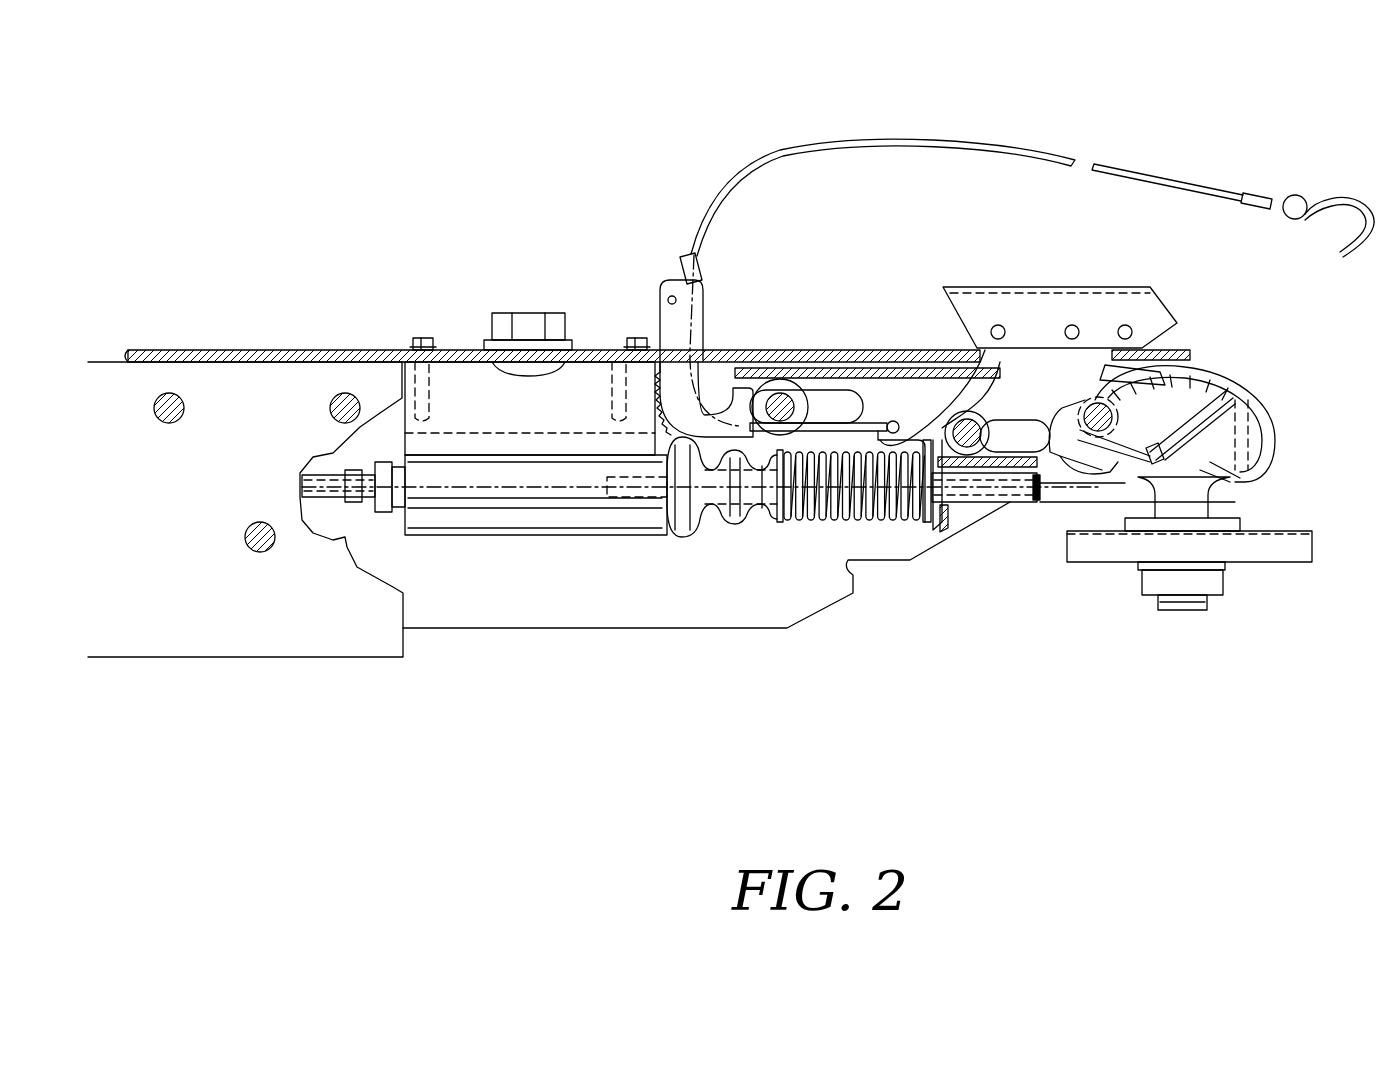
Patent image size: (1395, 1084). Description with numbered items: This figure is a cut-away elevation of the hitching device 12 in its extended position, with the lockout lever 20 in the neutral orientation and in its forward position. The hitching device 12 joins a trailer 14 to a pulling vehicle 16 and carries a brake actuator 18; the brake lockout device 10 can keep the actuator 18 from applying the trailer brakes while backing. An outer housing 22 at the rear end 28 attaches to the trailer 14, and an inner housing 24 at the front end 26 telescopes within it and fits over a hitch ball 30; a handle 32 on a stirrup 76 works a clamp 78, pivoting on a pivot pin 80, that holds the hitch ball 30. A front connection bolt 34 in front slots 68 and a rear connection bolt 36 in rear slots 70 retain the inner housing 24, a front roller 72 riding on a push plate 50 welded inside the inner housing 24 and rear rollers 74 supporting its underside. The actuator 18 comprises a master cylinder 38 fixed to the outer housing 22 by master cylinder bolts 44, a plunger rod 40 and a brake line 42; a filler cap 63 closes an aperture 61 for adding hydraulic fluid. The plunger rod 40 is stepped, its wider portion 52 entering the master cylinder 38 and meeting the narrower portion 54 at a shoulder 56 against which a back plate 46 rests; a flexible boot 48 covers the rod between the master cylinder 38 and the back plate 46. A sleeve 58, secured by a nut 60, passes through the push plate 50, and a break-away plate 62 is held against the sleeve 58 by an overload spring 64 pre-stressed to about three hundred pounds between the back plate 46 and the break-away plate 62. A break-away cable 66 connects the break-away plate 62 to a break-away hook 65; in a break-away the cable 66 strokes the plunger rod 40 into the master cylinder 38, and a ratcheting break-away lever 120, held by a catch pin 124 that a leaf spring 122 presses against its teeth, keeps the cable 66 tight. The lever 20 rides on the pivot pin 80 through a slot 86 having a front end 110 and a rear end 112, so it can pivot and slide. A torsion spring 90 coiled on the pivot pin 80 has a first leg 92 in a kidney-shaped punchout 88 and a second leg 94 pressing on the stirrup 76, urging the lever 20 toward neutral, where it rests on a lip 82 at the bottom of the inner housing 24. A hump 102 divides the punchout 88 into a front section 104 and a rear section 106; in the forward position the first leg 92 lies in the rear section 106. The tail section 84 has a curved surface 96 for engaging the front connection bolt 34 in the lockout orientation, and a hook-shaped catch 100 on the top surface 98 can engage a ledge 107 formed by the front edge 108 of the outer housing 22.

The brake lockout device 10 is at (1027, 634).
The hitching device 12 is at (583, 168).
The trailer 14 is at (108, 392).
The pulling vehicle 16 is at (1268, 560).
The brake actuator 18 is at (672, 545).
The lockout lever 20 is at (1272, 435).
The outer housing 22 is at (1200, 357).
The inner housing 24 is at (1255, 472).
The front end 26 is at (1235, 500).
The rear end 28 is at (124, 350).
The hitch ball 30 is at (1240, 520).
The handle 32 is at (1160, 340).
The front connection bolt 34 is at (958, 420).
The rear connection bolt 36 is at (775, 400).
The master cylinder 38 is at (550, 497).
The plunger rod 40 is at (1040, 490).
The brake line 42 is at (308, 476).
The master cylinder bolts 44 is at (425, 338).
The back plate 46 is at (779, 522).
The flexible boot 48 is at (690, 530).
The push plate 50 is at (936, 512).
The wider portion 52 is at (645, 500).
The narrower portion 54 is at (862, 530).
The shoulder 56 is at (752, 522).
The sleeve 58 is at (968, 503).
The nut 60 is at (1027, 503).
The aperture 61 is at (550, 345).
The break-away plate 62 is at (928, 525).
The filler cap 63 is at (540, 322).
The overload spring 64 is at (805, 522).
The break-away hook 65 is at (1341, 197).
The break-away cable 66 is at (957, 143).
The front slots 68 is at (880, 395).
The rear slots 70 is at (842, 405).
The front roller 72 is at (892, 420).
The rear rollers 74 is at (790, 400).
The stirrup 76 is at (1040, 345).
The clamp 78 is at (1100, 472).
The pivot pin 80 is at (1030, 360).
The lip 82 is at (1250, 486).
The tail section 84 is at (968, 370).
The slot 86 is at (1125, 382).
The kidney-shaped punchout 88 is at (1108, 474).
The torsion spring 90 is at (1098, 366).
The first leg 92 is at (1195, 355).
The second leg 94 is at (1090, 363).
The curved surface 96 is at (930, 385).
The top surface 98 is at (1205, 367).
The hook-shaped catch 100 is at (1240, 377).
The hump 102 is at (1245, 421).
The front section 104 is at (1245, 441).
The rear section 106 is at (1250, 400).
The ledge 107 is at (1205, 345).
The front edge 108 is at (1200, 350).
The front end 110 is at (1180, 366).
The rear end 112 is at (998, 366).
The ratcheting break-away lever 120 is at (698, 312).
The leaf spring 122 is at (650, 350).
The catch pin 124 is at (660, 340).